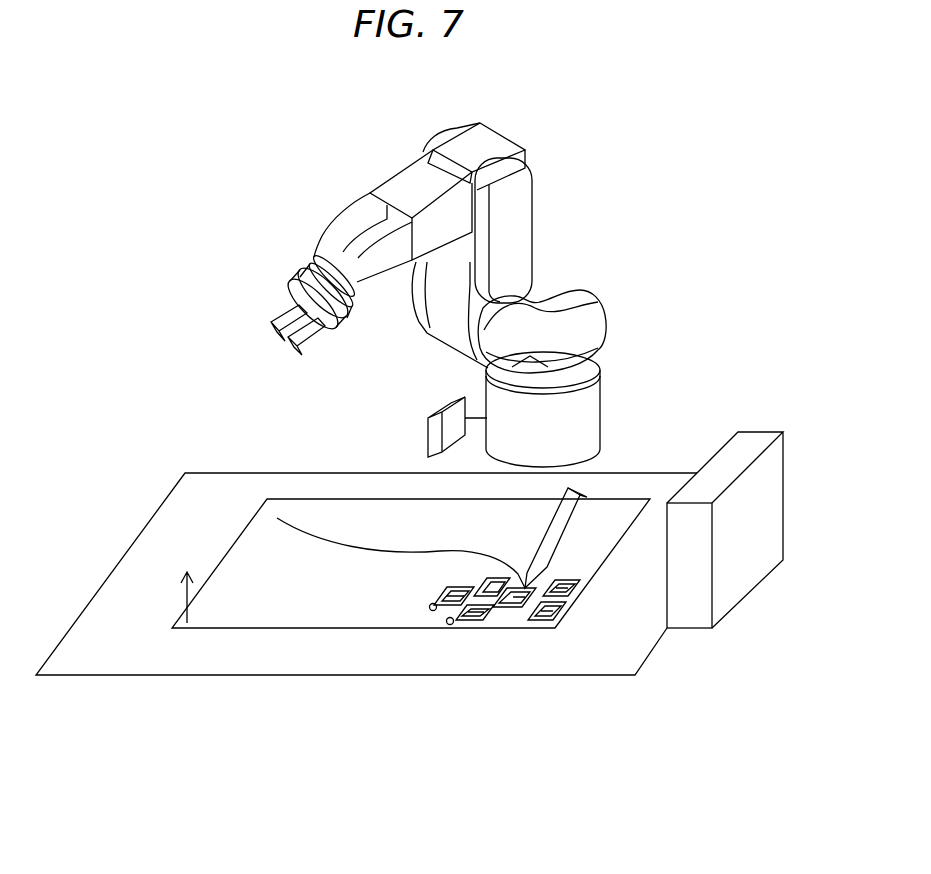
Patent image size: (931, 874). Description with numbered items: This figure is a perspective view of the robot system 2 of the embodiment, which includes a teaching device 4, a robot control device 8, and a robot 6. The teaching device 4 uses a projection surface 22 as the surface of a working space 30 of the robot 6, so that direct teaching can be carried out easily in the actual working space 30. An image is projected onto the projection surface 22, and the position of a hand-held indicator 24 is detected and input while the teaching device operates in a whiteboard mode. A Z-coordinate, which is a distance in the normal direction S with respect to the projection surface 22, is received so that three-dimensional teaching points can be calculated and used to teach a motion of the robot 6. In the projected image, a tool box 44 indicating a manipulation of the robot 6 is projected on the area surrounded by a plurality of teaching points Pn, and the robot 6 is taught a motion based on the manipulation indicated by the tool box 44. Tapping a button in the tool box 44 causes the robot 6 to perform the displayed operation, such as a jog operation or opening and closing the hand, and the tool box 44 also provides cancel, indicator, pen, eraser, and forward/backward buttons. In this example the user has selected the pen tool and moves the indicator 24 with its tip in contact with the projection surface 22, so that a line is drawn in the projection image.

The robot system 2 is at (666, 187).
The teaching device 4 is at (752, 431).
The robot 6 is at (398, 147).
The robot control device 8 is at (437, 409).
The projection surface 22 is at (243, 533).
The indicator 24 is at (570, 502).
The working space 30 is at (280, 592).
The tool box 44 is at (511, 637).
The teaching points Pn is at (433, 607).
The normal direction S is at (177, 597).